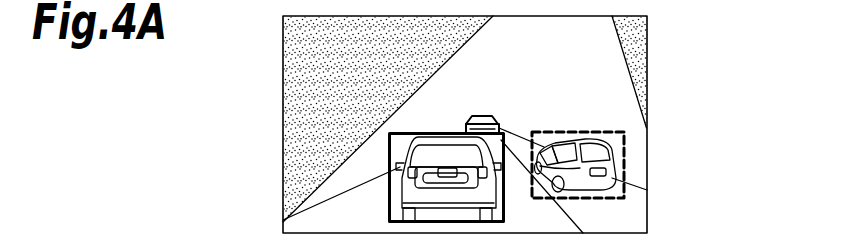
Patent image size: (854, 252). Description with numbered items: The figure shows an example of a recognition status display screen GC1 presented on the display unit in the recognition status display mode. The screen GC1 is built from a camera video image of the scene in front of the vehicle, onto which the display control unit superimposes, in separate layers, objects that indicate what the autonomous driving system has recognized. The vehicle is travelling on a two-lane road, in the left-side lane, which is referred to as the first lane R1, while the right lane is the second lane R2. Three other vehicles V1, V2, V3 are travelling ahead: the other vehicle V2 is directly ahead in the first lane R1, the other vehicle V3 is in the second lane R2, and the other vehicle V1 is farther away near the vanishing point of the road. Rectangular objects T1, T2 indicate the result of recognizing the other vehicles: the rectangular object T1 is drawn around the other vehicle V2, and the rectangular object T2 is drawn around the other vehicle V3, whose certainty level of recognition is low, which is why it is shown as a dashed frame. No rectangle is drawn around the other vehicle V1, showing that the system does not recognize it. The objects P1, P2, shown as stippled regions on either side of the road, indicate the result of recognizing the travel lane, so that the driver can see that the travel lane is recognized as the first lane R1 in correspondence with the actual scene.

The recognition status display screen GC1 is at (648, 40).
The object indicating the result of recognizing the travel lane P1 is at (282, 72).
The object indicating the result of recognizing the travel lane P2 is at (633, 67).
The first lane R1 is at (358, 217).
The second lane R2 is at (633, 208).
The rectangular object indicating the result of recognizing other vehicles T1 is at (388, 162).
The rectangular object indicating the result of recognizing other vehicles T2 is at (626, 148).
The other vehicle V1 is at (484, 116).
The other vehicle V2 is at (443, 130).
The other vehicle V3 is at (577, 131).